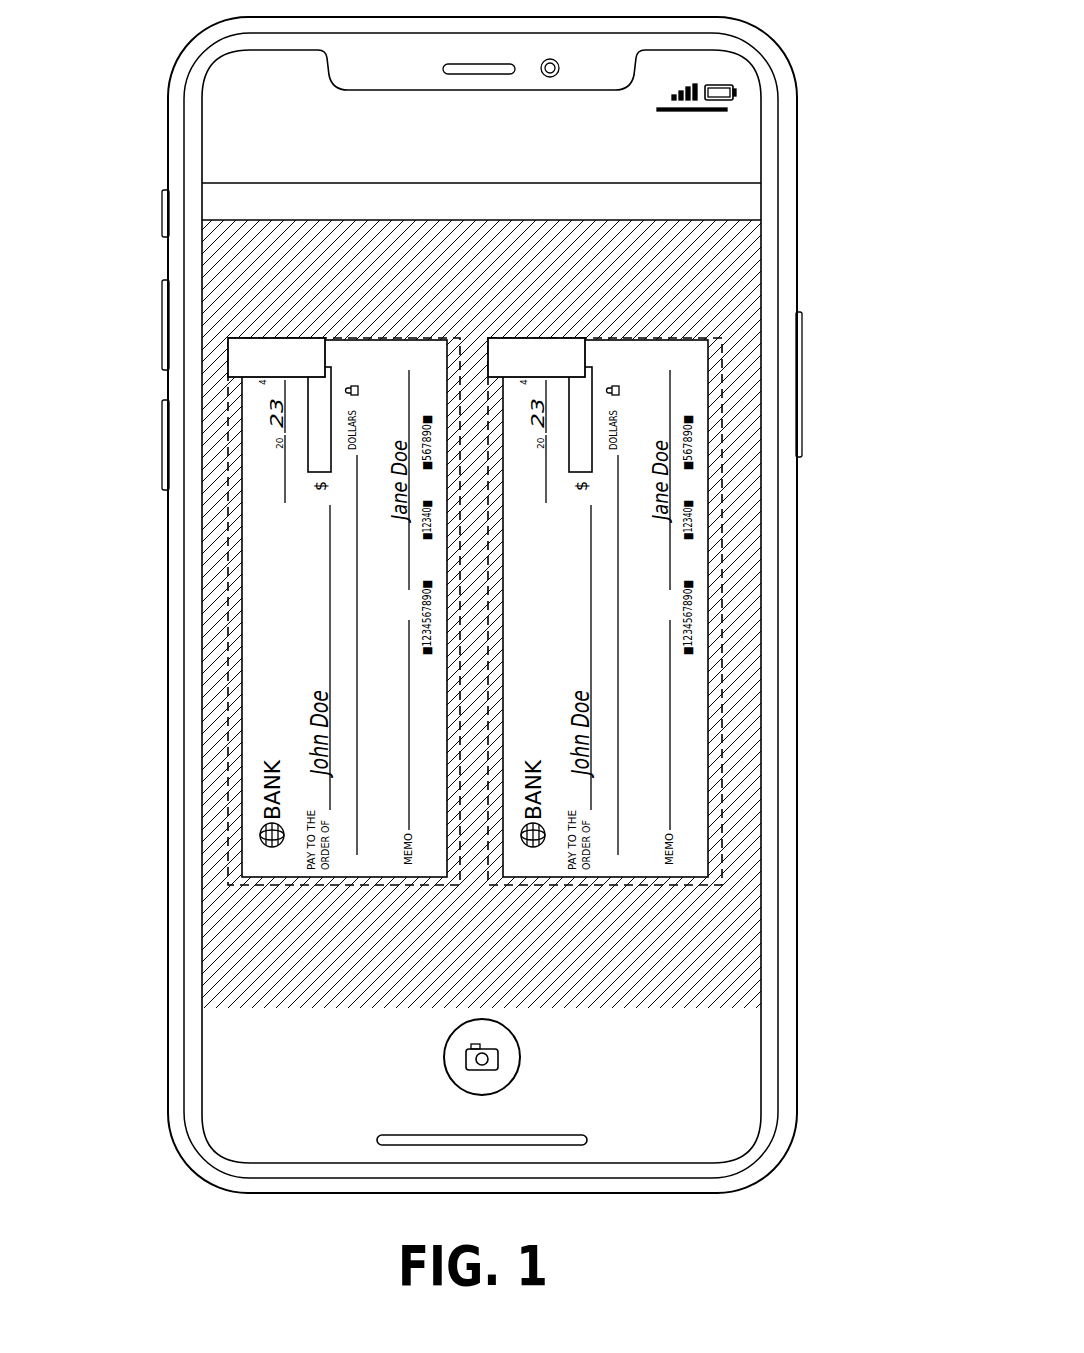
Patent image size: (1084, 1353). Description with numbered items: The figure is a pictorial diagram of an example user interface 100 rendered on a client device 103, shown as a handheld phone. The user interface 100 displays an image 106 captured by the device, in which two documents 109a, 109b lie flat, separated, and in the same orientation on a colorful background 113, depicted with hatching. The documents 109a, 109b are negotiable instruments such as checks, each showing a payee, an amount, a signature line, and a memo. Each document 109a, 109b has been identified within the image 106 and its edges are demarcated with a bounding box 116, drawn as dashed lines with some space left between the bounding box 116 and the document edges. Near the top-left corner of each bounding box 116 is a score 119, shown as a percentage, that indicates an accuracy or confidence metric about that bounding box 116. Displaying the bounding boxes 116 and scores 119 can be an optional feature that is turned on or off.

The user interface 100 is at (503, 605).
The client device 103 is at (802, 792).
The image 106 is at (477, 606).
The document 109a is at (263, 710).
The document 109b is at (688, 678).
The background 113 is at (477, 614).
The bounding box 116 is at (224, 395).
The score 119 is at (224, 346).